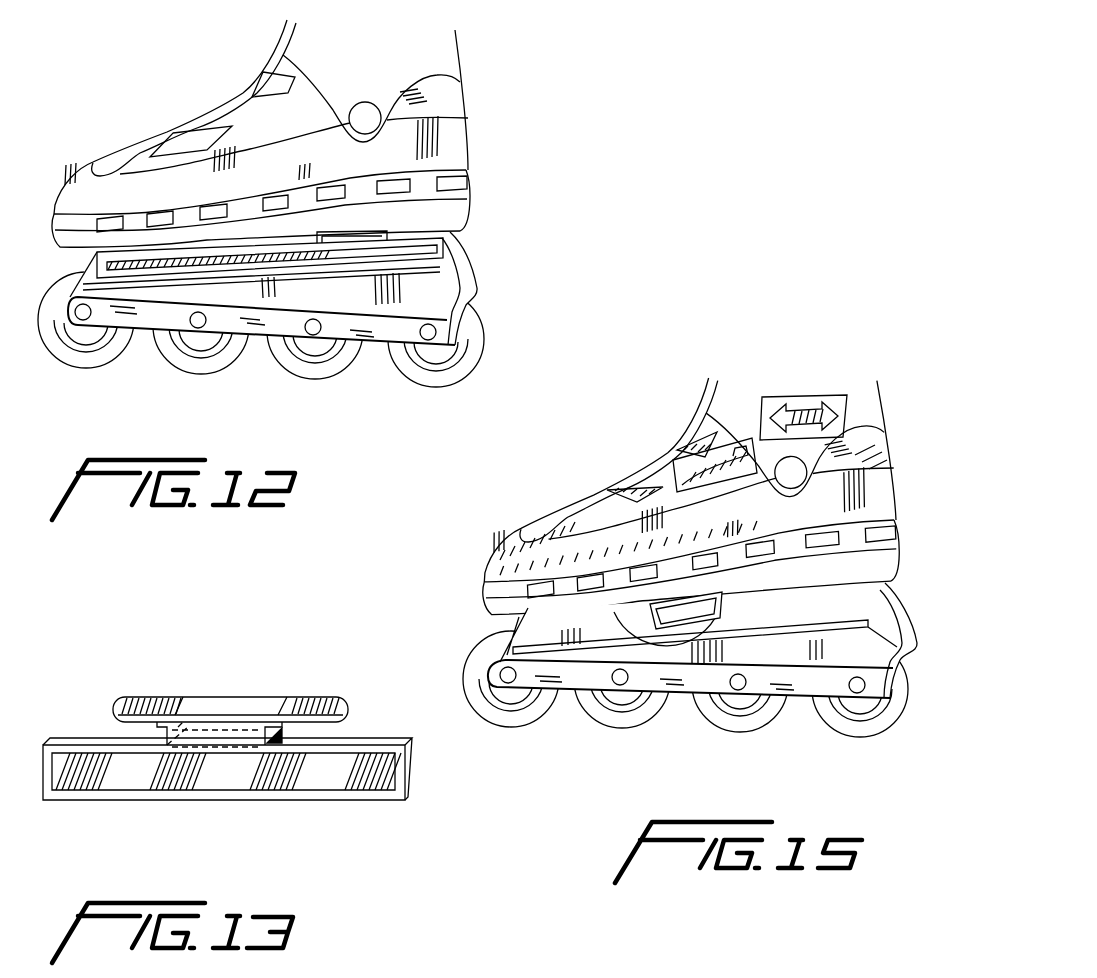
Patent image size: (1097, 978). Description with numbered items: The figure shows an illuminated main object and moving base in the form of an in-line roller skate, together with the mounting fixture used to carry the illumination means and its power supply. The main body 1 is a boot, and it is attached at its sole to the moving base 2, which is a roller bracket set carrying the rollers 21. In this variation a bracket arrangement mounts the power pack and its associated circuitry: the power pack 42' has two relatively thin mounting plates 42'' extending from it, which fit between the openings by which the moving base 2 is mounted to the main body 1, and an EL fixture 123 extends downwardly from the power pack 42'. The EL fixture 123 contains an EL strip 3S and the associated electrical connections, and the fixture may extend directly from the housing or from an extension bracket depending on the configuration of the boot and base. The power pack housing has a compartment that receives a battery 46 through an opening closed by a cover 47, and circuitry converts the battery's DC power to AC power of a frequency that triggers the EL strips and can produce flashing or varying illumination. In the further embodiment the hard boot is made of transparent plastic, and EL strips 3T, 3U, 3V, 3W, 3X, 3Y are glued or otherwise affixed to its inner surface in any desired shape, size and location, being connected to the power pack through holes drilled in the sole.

In FIG. 12, the main body 1 is at (457, 133).
In FIG. 15, the main body 1 is at (890, 420).
In FIG. 12, the moving base 2 is at (262, 343).
In FIG. 15, the moving base 2 is at (617, 720).
In FIG. 12, the rollers 21 is at (180, 360).
In FIG. 15, the rollers 21 is at (550, 720).
In FIG. 13, the EL strip 3S is at (243, 777).
In FIG. 15, the EL strip 3T is at (590, 533).
In FIG. 15, the EL strip 3U is at (643, 490).
In FIG. 15, the EL strip 3V is at (703, 437).
In FIG. 15, the EL strip 3W is at (724, 453).
In FIG. 15, the EL strip 3X is at (790, 403).
In FIG. 15, the EL strip 3Y is at (880, 490).
In FIG. 13, the power pack 42' is at (230, 670).
In FIG. 13, the mounting plates 42'' is at (240, 674).
In FIG. 15, the battery 46 is at (737, 598).
In FIG. 15, the cover 47 is at (683, 612).
In FIG. 13, the EL fixture 123 is at (110, 802).